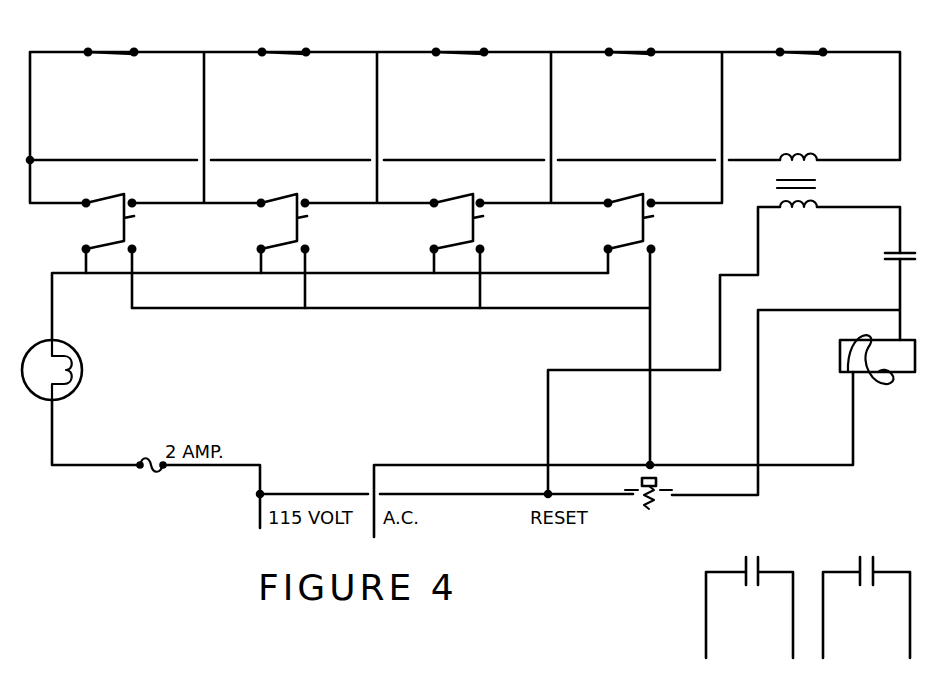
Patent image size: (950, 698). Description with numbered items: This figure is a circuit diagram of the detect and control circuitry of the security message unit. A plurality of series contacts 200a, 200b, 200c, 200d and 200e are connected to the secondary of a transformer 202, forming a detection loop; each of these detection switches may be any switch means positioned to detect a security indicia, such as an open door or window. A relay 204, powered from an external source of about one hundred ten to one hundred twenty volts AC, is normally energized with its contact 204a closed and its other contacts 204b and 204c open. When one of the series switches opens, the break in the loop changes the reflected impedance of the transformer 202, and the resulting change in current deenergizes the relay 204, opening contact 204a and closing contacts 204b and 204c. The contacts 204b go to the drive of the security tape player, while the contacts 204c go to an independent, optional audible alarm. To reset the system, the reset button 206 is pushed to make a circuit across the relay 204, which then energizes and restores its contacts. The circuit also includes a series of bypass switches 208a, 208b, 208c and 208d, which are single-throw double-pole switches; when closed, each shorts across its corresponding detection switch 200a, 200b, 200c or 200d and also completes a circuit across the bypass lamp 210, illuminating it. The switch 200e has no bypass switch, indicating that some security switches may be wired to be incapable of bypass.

The series contact 200a is at (96, 49).
The series contact 200b is at (270, 49).
The series contact 200c is at (450, 49).
The series contact 200d is at (618, 49).
The series contact 200e is at (786, 49).
The transformer 202 is at (818, 189).
The relay 204 is at (838, 352).
The relay contact 204a is at (883, 255).
The relay contact 204b is at (752, 556).
The relay contact 204c is at (866, 556).
The reset button 206 is at (672, 490).
The bypass switch 208a is at (130, 240).
The bypass switch 208b is at (305, 240).
The bypass switch 208c is at (479, 240).
The bypass switch 208d is at (653, 223).
The bypass lamp 210 is at (80, 388).